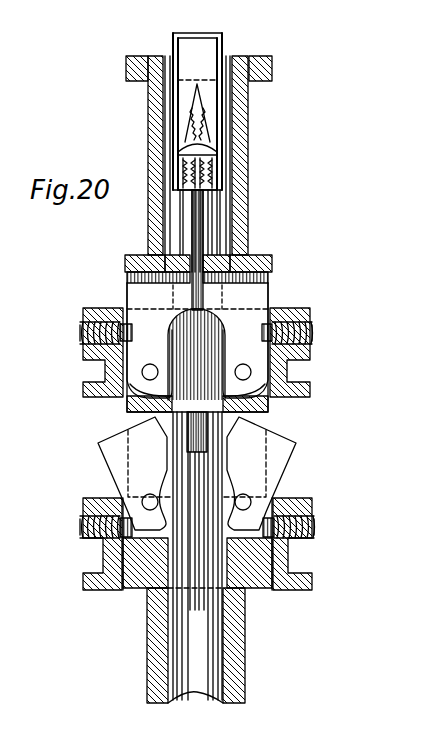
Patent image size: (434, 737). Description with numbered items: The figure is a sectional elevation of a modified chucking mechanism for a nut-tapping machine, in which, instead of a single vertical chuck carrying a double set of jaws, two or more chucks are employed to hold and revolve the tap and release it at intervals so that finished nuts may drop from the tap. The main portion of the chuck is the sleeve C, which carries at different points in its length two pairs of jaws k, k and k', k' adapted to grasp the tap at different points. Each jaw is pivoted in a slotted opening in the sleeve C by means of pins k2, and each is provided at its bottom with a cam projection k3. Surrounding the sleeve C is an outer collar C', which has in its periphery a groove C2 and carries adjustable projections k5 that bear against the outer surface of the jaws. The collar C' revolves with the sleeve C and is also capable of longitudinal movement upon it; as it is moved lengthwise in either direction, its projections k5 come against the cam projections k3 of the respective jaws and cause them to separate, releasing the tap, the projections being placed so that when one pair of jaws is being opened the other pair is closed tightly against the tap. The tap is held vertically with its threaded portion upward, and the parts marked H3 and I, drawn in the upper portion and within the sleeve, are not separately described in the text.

The cap tube H3 is at (197, 111).
The spindle I is at (200, 212).
The chuck sleeve C is at (197, 557).
The outer collar C' is at (215, 402).
The groove C2 is at (103, 562).
The jaws k is at (197, 341).
The jaws k' is at (197, 473).
The pins k2 is at (350, 365).
The cam projection k3 is at (322, 412).
The adjustable projections k5 is at (83, 331).